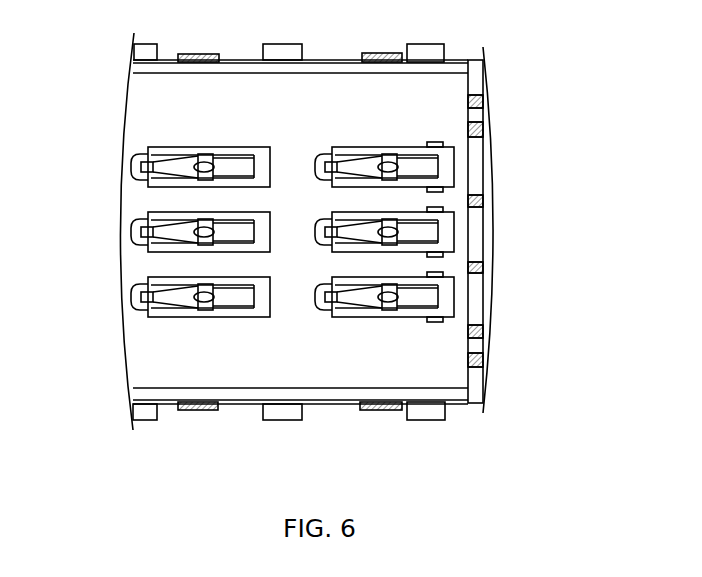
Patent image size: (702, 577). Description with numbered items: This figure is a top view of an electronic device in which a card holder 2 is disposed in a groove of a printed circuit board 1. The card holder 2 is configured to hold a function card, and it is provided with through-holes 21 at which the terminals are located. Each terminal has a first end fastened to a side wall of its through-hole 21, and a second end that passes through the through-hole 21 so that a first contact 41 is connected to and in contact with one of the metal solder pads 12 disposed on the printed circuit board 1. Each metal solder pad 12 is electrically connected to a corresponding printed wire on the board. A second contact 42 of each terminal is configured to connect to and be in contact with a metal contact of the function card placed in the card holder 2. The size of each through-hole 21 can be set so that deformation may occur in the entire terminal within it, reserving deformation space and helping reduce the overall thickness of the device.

The printed circuit board 1 is at (477, 165).
The card holder 2 is at (448, 98).
The metal solder pad 12 is at (136, 230).
The through-hole 21 is at (491, 314).
The first contact 41 is at (329, 383).
The second contact 42 is at (387, 383).